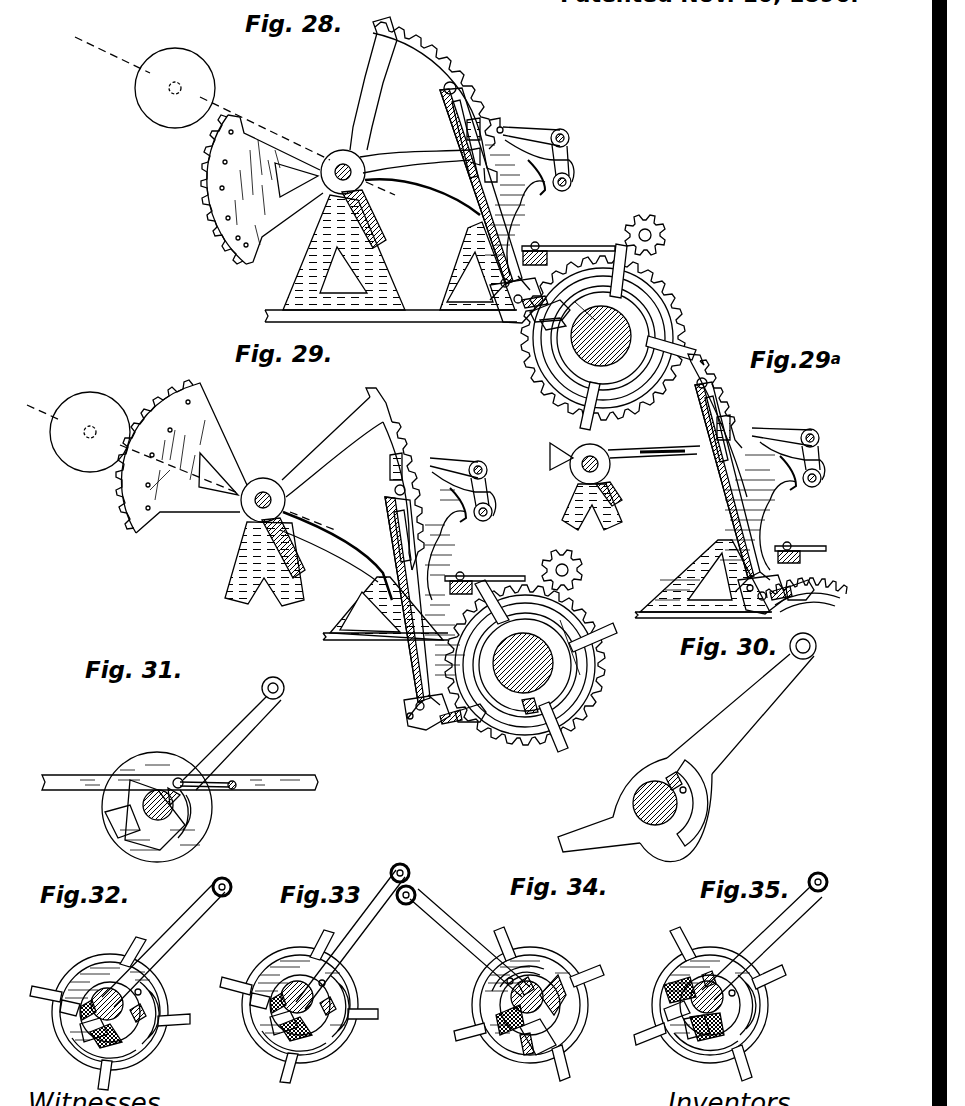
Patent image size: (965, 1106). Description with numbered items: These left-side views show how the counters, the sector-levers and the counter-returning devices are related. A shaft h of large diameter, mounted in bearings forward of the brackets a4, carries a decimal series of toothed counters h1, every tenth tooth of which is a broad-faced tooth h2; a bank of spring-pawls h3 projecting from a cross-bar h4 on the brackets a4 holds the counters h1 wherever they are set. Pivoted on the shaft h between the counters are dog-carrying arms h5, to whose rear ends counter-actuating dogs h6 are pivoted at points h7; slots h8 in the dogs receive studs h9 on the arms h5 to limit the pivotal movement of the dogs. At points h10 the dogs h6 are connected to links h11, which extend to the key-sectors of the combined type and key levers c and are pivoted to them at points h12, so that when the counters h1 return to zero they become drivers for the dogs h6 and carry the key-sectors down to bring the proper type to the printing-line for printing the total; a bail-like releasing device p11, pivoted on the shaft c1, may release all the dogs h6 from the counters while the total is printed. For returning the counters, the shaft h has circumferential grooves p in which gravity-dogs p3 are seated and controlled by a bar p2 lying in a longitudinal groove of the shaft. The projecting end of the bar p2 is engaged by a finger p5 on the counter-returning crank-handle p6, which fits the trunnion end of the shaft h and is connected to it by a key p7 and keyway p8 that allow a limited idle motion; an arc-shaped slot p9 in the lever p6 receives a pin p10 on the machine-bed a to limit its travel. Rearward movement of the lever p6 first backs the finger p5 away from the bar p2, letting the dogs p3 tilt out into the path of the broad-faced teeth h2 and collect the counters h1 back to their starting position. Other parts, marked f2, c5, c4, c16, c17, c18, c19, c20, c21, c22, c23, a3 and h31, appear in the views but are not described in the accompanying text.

In FIG. 28, the roller f2 is at (212, 78).
In FIG. 29, the roller f2 is at (102, 410).
In FIG. 28, the toothed sector c5 is at (200, 183).
In FIG. 29, the toothed sector c5 is at (120, 495).
In FIG. 28, the shaft c1 is at (338, 165).
In FIG. 29, the shaft c1 is at (263, 492).
In FIG. 29a, the shaft c1 is at (570, 466).
In FIG. 28, the arm c4 is at (296, 180).
In FIG. 29, the arm c4 is at (247, 508).
In FIG. 29a, the arm c4 is at (605, 476).
In FIG. 28, the combined type and key levers c is at (388, 80).
In FIG. 29, the combined type and key levers c is at (316, 473).
In FIG. 29a, the combined type and key levers c is at (688, 460).
In FIG. 28, the toothed sector c16 is at (460, 70).
In FIG. 29, the toothed sector c16 is at (410, 432).
In FIG. 29a, the toothed sector c16 is at (720, 378).
In FIG. 28, the pivot points h12 is at (444, 92).
In FIG. 29, the pivot points h12 is at (395, 488).
In FIG. 29a, the pivot points h12 is at (698, 390).
In FIG. 28, the links h11 is at (463, 168).
In FIG. 29, the links h11 is at (390, 515).
In FIG. 29a, the links h11 is at (716, 495).
In FIG. 28, the standard a3 is at (330, 236).
In FIG. 29, the standard a3 is at (250, 560).
In FIG. 29a, the standard a3 is at (620, 500).
In FIG. 28, the hand releasing device p11 is at (372, 203).
In FIG. 29, the hand releasing device p11 is at (296, 560).
In FIG. 29a, the hand releasing device p11 is at (625, 490).
In FIG. 28, the brackets a4 is at (470, 228).
In FIG. 29, the brackets a4 is at (376, 577).
In FIG. 29a, the brackets a4 is at (714, 518).
In FIG. 28, the machine-bed a is at (378, 318).
In FIG. 29, the machine-bed a is at (385, 636).
In FIG. 29a, the machine-bed a is at (703, 615).
In FIG. 31, the machine-bed a is at (265, 775).
In FIG. 28, the connection points h10 is at (506, 268).
In FIG. 29, the connection points h10 is at (418, 692).
In FIG. 29a, the connection points h10 is at (735, 568).
In FIG. 28, the pivot-pins h7 is at (500, 283).
In FIG. 29, the pivot-pins h7 is at (406, 715).
In FIG. 29a, the pivot-pins h7 is at (748, 592).
In FIG. 28, the lateral pins or studs h9 is at (513, 299).
In FIG. 29, the lateral pins or studs h9 is at (415, 705).
In FIG. 29a, the lateral pins or studs h9 is at (764, 600).
In FIG. 28, the counter-actuating dogs h6 is at (506, 315).
In FIG. 29, the counter-actuating dogs h6 is at (416, 720).
In FIG. 29a, the counter-actuating dogs h6 is at (744, 590).
In FIG. 28, the slots h8 is at (522, 318).
In FIG. 29, the slots h8 is at (446, 722).
In FIG. 29a, the slots h8 is at (790, 597).
In FIG. 28, the dog-carrying arms h5 is at (560, 322).
In FIG. 29, the dog-carrying arms h5 is at (488, 720).
In FIG. 29a, the dog-carrying arms h5 is at (800, 602).
In FIG. 28, the counters h1 is at (675, 308).
In FIG. 29, the counters h1 is at (604, 672).
In FIG. 29a, the counters h1 is at (800, 590).
In FIG. 28, the circumferential grooves p is at (640, 336).
In FIG. 29, the circumferential grooves p is at (510, 710).
In FIG. 32, the circumferential grooves p is at (78, 1015).
In FIG. 33, the circumferential grooves p is at (268, 1008).
In FIG. 34, the circumferential grooves p is at (506, 1024).
In FIG. 35, the circumferential grooves p is at (678, 1008).
In FIG. 28, the broad-faced tooth h2 is at (583, 413).
In FIG. 29, the broad-faced tooth h2 is at (566, 728).
In FIG. 32, the broad-faced tooth h2 is at (110, 1006).
In FIG. 33, the broad-faced tooth h2 is at (299, 1013).
In FIG. 34, the broad-faced tooth h2 is at (514, 1004).
In FIG. 35, the broad-faced tooth h2 is at (711, 1005).
In FIG. 28, the arc-shaped slot p9 is at (565, 365).
In FIG. 30, the arc-shaped slot p9 is at (703, 823).
In FIG. 31, the arc-shaped slot p9 is at (190, 838).
In FIG. 32, the arc-shaped slot p9 is at (161, 1022).
In FIG. 33, the arc-shaped slot p9 is at (361, 1015).
In FIG. 34, the arc-shaped slot p9 is at (522, 955).
In FIG. 35, the arc-shaped slot p9 is at (781, 998).
In FIG. 28, the finger p5 is at (586, 302).
In FIG. 30, the finger p5 is at (593, 831).
In FIG. 31, the finger p5 is at (130, 828).
In FIG. 32, the finger p5 is at (63, 1036).
In FIG. 33, the finger p5 is at (248, 1033).
In FIG. 34, the finger p5 is at (564, 1042).
In FIG. 35, the finger p5 is at (660, 1033).
In FIG. 28, the pinion h31 is at (670, 240).
In FIG. 29, the pinion h31 is at (588, 562).
In FIG. 28, the spring-pawls h3 is at (566, 246).
In FIG. 29, the spring-pawls h3 is at (502, 576).
In FIG. 29a, the spring-pawls h3 is at (800, 546).
In FIG. 28, the cross-bar h4 is at (530, 250).
In FIG. 29, the cross-bar h4 is at (458, 580).
In FIG. 29a, the cross-bar h4 is at (782, 550).
In FIG. 28, the pin c19 is at (500, 127).
In FIG. 28, the link c22 is at (528, 127).
In FIG. 29, the link c22 is at (446, 460).
In FIG. 29a, the link c22 is at (785, 428).
In FIG. 28, the pivot pin c23 is at (570, 134).
In FIG. 29, the pivot pin c23 is at (484, 464).
In FIG. 29a, the pivot pin c23 is at (816, 432).
In FIG. 28, the lever c20 is at (575, 152).
In FIG. 29, the lever c20 is at (492, 485).
In FIG. 29a, the lever c20 is at (798, 461).
In FIG. 28, the link c17 is at (565, 167).
In FIG. 29, the link c17 is at (490, 499).
In FIG. 29a, the link c17 is at (760, 440).
In FIG. 28, the pivot pin c18 is at (572, 181).
In FIG. 29, the pivot pin c18 is at (493, 512).
In FIG. 29a, the pivot pin c18 is at (818, 485).
In FIG. 28, the hook c21 is at (548, 192).
In FIG. 29, the hook c21 is at (482, 524).
In FIG. 29a, the hook c21 is at (800, 495).
In FIG. 29, the gravity-dogs p3 is at (580, 678).
In FIG. 32, the gravity-dogs p3 is at (81, 1054).
In FIG. 33, the gravity-dogs p3 is at (275, 1050).
In FIG. 35, the gravity-dogs p3 is at (683, 1053).
In FIG. 29, the bar p2 is at (530, 716).
In FIG. 31, the bar p2 is at (106, 818).
In FIG. 32, the bar p2 is at (48, 1016).
In FIG. 33, the bar p2 is at (238, 1011).
In FIG. 34, the bar p2 is at (531, 1063).
In FIG. 35, the bar p2 is at (653, 1019).
In FIG. 30, the shaft h is at (655, 812).
In FIG. 31, the shaft h is at (200, 822).
In FIG. 32, the shaft h is at (104, 1008).
In FIG. 33, the shaft h is at (315, 1005).
In FIG. 34, the shaft h is at (509, 1005).
In FIG. 35, the shaft h is at (725, 1005).
In FIG. 30, the counter-returning lever or crank-handle p6 is at (723, 743).
In FIG. 31, the counter-returning lever or crank-handle p6 is at (238, 731).
In FIG. 32, the counter-returning lever or crank-handle p6 is at (166, 942).
In FIG. 33, the counter-returning lever or crank-handle p6 is at (352, 936).
In FIG. 34, the counter-returning lever or crank-handle p6 is at (463, 941).
In FIG. 35, the counter-returning lever or crank-handle p6 is at (764, 936).
In FIG. 30, the key p7 is at (672, 786).
In FIG. 31, the key p7 is at (162, 785).
In FIG. 32, the key p7 is at (163, 1000).
In FIG. 33, the key p7 is at (353, 989).
In FIG. 34, the key p7 is at (485, 980).
In FIG. 35, the key p7 is at (702, 954).
In FIG. 30, the keyway p8 is at (686, 790).
In FIG. 31, the keyway p8 is at (192, 803).
In FIG. 32, the keyway p8 is at (96, 958).
In FIG. 33, the keyway p8 is at (284, 954).
In FIG. 34, the keyway p8 is at (541, 959).
In FIG. 35, the keyway p8 is at (767, 1011).
In FIG. 31, the lateral stud or pin p10 is at (181, 778).